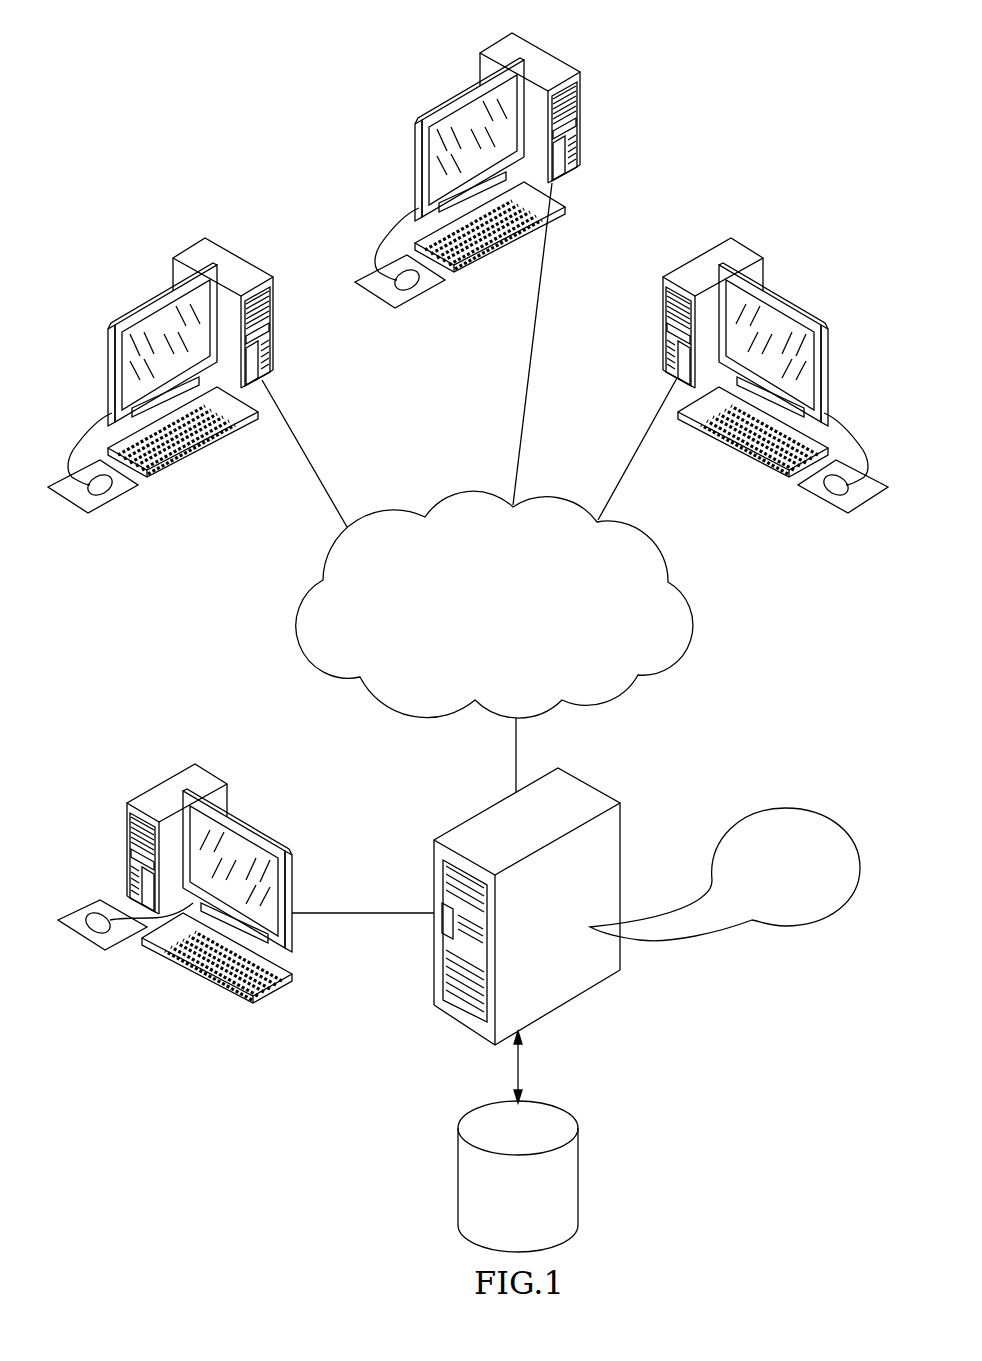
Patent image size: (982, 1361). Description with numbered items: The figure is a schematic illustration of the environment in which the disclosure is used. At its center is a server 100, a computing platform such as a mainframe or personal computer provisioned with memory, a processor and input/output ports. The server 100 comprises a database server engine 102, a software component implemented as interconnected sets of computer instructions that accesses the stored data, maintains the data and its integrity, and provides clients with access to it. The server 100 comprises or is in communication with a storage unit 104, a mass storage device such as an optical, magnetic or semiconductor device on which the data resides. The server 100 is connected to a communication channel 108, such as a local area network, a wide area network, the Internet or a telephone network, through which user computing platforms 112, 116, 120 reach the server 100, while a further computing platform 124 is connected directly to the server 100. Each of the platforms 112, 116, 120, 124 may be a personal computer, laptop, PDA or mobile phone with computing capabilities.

The server 100 is at (598, 789).
The database server engine 102 is at (832, 818).
The storage unit 104 is at (548, 1104).
The communication channel 108 is at (706, 630).
The computing platform 112 is at (750, 249).
The computing platform 116 is at (563, 62).
The computing platform 120 is at (232, 253).
The computing platform 124 is at (213, 774).